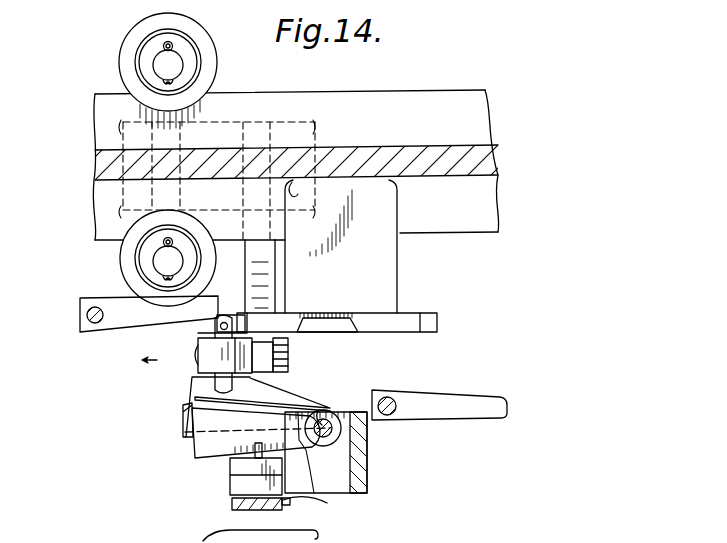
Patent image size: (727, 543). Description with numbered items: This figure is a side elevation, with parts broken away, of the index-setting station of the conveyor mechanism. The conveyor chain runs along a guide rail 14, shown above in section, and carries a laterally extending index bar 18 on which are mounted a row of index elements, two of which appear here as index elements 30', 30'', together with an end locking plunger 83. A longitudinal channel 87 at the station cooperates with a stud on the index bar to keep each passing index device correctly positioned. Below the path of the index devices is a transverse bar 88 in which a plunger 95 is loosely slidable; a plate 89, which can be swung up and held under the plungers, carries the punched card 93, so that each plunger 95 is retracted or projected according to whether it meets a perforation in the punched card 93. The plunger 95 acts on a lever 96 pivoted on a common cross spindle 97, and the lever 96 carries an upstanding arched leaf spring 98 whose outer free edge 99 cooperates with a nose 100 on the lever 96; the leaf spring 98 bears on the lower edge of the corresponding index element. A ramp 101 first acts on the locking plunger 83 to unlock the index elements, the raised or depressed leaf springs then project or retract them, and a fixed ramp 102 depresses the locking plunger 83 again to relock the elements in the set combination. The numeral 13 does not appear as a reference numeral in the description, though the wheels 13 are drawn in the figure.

The wheel 13 is at (205, 42).
The guide rail 14 is at (441, 98).
The index bar 18 is at (288, 356).
The index element 30' is at (193, 376).
The index element 30'' is at (205, 343).
The end locking plunger 83 is at (240, 315).
The longitudinal channel 87 is at (414, 313).
The transverse bar 88 is at (245, 485).
The plate 89 is at (274, 519).
The punched card 93 is at (273, 508).
The plunger 95 is at (230, 448).
The lever 96 is at (330, 408).
The cross spindle 97 is at (330, 432).
The leaf spring 98 is at (310, 400).
The free edge 99 is at (185, 420).
The nose 100 is at (188, 397).
The ramp 101 is at (452, 398).
The fixed ramp 102 is at (110, 322).